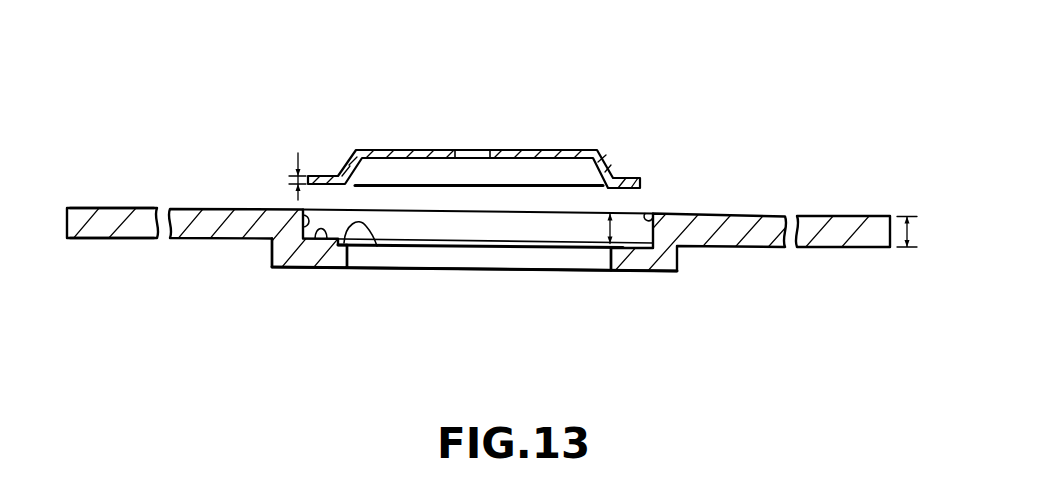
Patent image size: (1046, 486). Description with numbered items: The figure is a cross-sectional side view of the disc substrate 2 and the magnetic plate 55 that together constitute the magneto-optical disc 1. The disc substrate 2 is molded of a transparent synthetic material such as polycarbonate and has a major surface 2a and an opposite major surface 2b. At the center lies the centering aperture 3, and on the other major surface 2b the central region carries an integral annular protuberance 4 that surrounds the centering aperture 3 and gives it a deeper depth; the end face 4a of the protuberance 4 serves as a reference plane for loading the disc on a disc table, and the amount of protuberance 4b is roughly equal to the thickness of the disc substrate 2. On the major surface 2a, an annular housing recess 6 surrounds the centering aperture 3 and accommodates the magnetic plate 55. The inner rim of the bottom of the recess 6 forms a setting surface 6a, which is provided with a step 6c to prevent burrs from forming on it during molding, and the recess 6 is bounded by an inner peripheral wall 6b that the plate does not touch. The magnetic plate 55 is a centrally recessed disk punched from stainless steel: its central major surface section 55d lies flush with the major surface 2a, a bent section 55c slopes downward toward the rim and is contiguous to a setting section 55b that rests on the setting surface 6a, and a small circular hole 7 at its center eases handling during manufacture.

The magneto-optical disc 1 is at (788, 186).
The disc substrate 2 is at (96, 220).
The major surface 2a is at (131, 211).
The other major surface 2b is at (107, 239).
The centering aperture 3 is at (609, 256).
The annular protuberance 4 is at (677, 259).
The end face of the protuberance 4a is at (636, 272).
The amount of protuberance 4b is at (271, 255).
The annular housing recess 6 is at (302, 211).
The setting surface 6a is at (320, 240).
The inner peripheral wall 6b is at (649, 215).
The step 6c is at (377, 246).
The circular hole 7 is at (478, 151).
The magnetic plate 55 is at (569, 151).
The setting section 55b is at (634, 178).
The bent section 55c is at (609, 166).
The central major surface section 55d is at (387, 150).